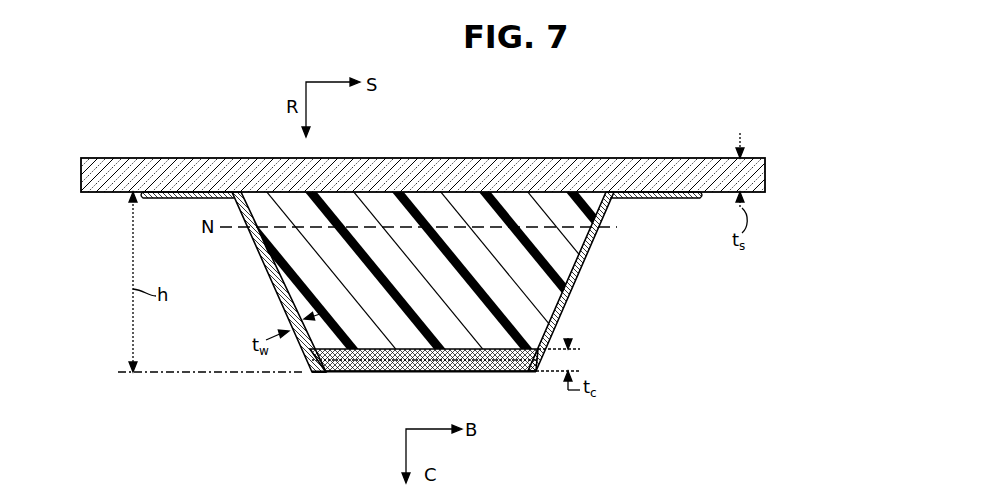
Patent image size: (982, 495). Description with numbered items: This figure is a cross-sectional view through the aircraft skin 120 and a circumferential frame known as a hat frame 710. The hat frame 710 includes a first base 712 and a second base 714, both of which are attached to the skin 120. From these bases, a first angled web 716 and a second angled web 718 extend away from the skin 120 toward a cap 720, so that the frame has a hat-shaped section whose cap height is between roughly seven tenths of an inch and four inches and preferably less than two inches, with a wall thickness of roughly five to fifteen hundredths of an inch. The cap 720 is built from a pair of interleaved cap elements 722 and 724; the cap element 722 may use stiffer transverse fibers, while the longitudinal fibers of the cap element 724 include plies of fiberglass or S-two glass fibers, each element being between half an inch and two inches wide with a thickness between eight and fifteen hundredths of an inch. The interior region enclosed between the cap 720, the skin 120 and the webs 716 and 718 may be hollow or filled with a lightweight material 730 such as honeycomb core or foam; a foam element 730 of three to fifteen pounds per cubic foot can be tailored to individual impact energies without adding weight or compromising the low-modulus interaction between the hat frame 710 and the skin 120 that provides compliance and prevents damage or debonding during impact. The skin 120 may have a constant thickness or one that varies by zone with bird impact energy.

The skin 120 is at (231, 157).
The lightweight material 730 is at (452, 212).
The hat frame 710 is at (432, 282).
The first base 712 is at (673, 197).
The second base 714 is at (172, 197).
The first angled web 716 is at (593, 232).
The second angled web 718 is at (262, 263).
The cap 720 is at (467, 378).
The cap element 722 is at (311, 372).
The cap element 724 is at (386, 362).